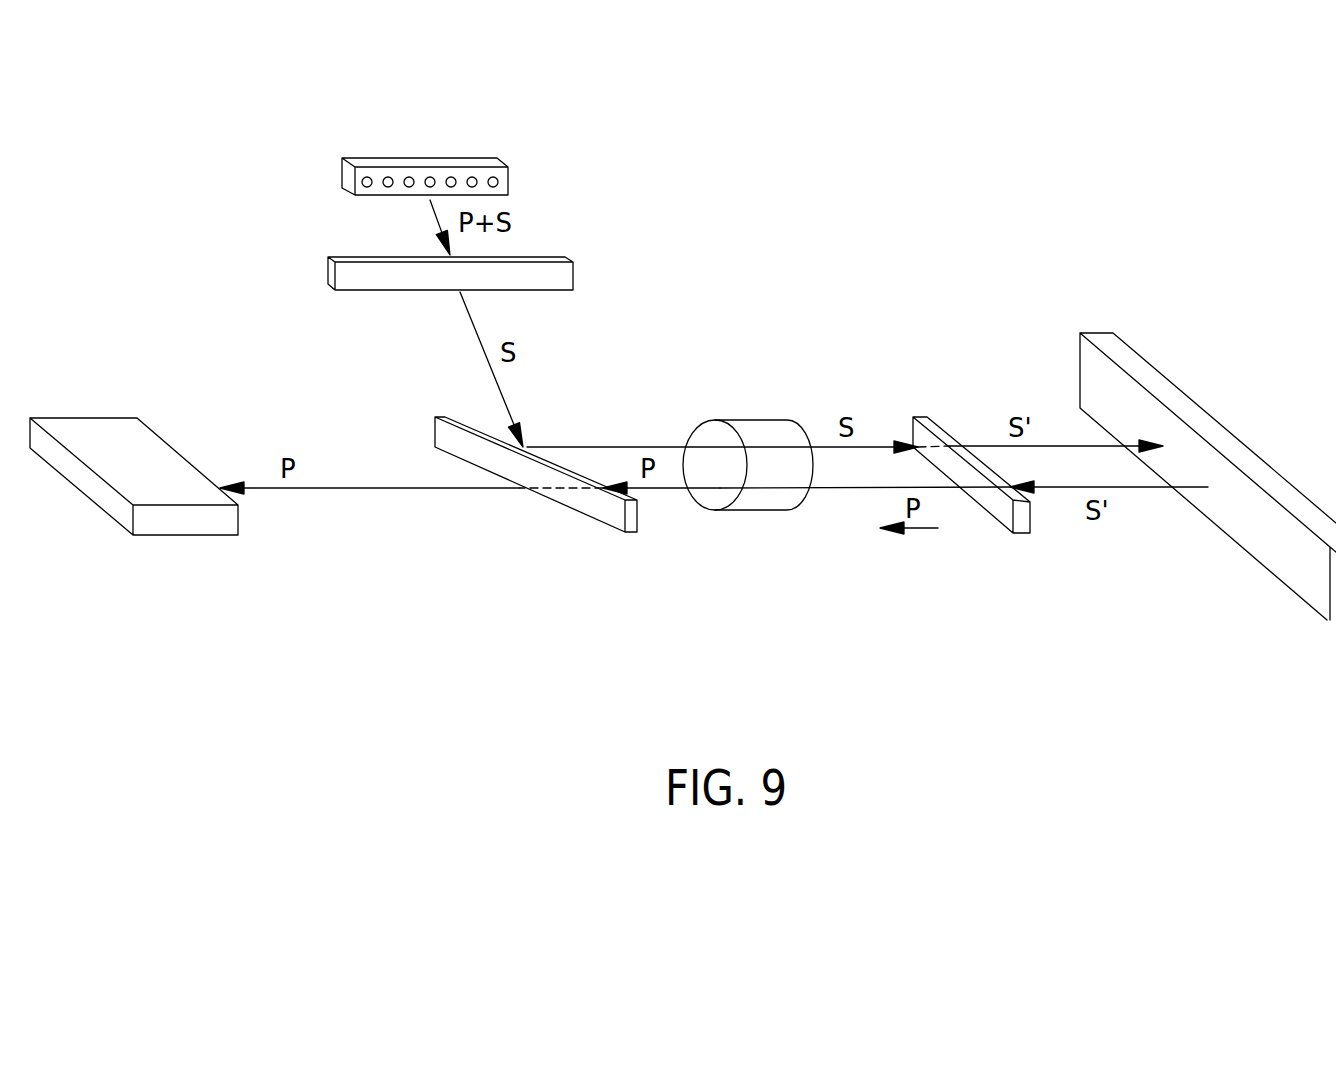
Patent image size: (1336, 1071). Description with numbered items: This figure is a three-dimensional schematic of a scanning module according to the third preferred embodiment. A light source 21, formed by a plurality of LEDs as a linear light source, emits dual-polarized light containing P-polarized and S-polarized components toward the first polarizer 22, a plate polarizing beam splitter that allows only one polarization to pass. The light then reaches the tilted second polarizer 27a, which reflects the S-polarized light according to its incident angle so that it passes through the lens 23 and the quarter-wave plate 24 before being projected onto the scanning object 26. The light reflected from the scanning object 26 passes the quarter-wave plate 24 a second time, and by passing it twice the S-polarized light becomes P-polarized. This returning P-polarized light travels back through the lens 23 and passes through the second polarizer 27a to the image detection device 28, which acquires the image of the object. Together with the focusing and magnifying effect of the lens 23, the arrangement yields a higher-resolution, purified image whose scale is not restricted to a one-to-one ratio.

The light source 21 is at (463, 160).
The first polarizer 22 is at (553, 255).
The lens 23 is at (715, 420).
The quarter-wave plate 24 is at (933, 425).
The scanning object 26 is at (1140, 360).
The second polarizer 27a is at (631, 533).
The image detection device 28 is at (170, 527).